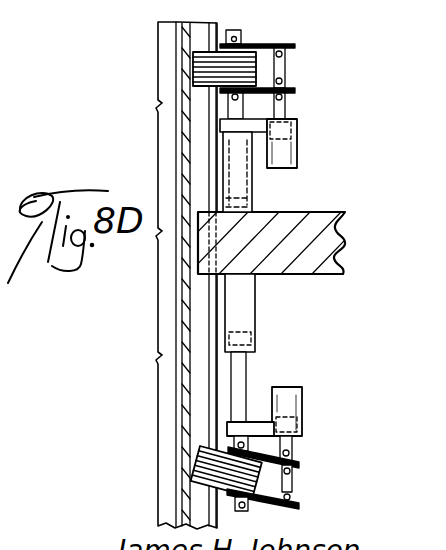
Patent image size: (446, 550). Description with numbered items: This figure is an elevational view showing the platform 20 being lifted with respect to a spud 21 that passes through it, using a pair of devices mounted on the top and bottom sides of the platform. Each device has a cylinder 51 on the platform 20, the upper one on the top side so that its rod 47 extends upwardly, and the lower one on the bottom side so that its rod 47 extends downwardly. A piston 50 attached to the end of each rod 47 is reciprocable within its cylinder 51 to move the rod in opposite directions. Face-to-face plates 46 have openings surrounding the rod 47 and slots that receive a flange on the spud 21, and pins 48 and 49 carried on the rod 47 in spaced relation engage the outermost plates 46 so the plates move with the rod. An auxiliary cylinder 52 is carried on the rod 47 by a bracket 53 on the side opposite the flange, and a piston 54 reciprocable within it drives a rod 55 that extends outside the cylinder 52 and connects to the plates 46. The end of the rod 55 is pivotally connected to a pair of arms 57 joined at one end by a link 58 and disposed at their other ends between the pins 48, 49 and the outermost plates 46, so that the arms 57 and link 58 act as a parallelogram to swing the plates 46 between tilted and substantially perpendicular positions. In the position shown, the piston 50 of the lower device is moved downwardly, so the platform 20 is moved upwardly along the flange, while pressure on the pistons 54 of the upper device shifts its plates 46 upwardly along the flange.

The platform 20 is at (342, 243).
The spud 21 is at (178, 348).
The plates 46 is at (256, 70).
The rod 47 is at (247, 372).
The pin 48 is at (242, 36).
The pin 49 is at (292, 450).
The piston 50 is at (251, 338).
The cylinder 51 is at (252, 189).
The auxiliary cylinder 52 is at (298, 146).
The bracket 53 is at (256, 423).
The piston 54 is at (292, 127).
The rod 55 is at (290, 112).
The arms 57 is at (298, 466).
The link 58 is at (294, 500).